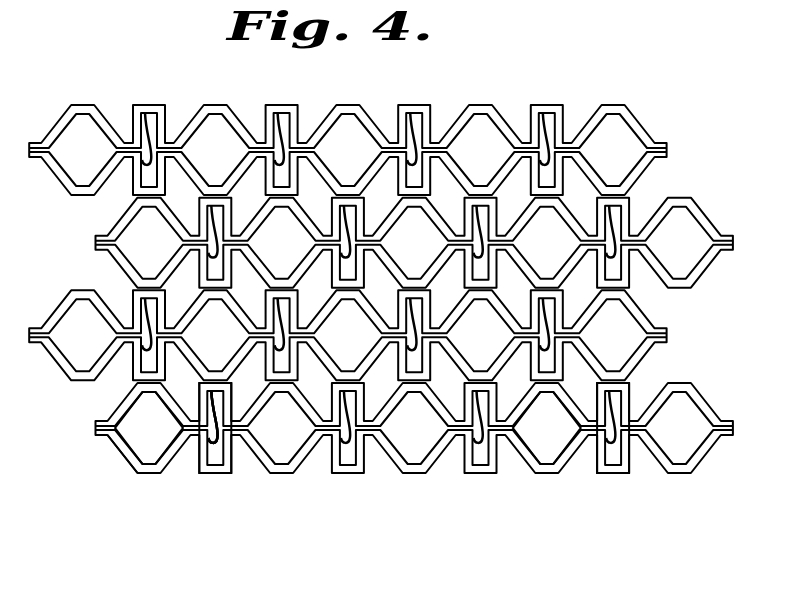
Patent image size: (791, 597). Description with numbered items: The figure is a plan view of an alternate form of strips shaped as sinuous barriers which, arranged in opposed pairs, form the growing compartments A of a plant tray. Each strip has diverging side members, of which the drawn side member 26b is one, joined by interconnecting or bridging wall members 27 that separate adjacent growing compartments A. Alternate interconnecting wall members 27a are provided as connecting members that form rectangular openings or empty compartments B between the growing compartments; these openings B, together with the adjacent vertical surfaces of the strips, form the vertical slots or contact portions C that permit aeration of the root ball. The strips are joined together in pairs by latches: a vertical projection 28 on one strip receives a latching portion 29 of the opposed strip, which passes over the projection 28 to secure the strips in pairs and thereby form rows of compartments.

The outer side edge of link 26b is at (114, 449).
The interconnecting wall member 27 is at (152, 470).
The vertical projection 28 is at (205, 440).
The alternate interconnecting wall member 27a is at (213, 469).
The latching portion 29 is at (209, 421).
The vertical slot C is at (497, 428).
The growing compartment A is at (542, 445).
The rectangular opening B is at (615, 456).